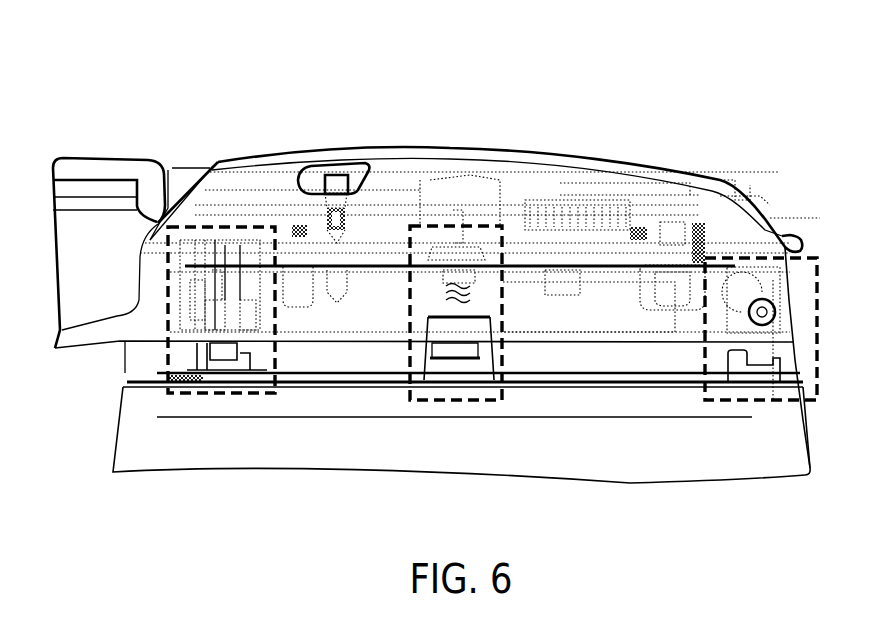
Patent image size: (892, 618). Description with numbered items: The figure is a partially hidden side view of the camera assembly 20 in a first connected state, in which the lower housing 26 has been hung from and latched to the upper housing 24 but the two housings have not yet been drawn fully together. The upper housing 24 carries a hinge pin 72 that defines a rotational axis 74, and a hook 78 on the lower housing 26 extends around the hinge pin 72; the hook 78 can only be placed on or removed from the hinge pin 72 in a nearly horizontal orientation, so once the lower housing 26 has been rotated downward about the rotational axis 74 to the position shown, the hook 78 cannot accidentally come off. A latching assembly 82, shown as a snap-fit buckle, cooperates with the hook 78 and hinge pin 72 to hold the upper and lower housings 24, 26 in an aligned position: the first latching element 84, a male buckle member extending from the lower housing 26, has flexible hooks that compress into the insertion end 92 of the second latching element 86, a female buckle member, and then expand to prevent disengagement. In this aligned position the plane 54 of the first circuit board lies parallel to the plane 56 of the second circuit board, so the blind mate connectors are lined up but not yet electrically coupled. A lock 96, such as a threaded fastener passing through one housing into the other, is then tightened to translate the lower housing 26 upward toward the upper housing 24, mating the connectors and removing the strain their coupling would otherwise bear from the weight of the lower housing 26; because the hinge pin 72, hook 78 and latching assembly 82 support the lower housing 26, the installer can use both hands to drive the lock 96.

The camera assembly 20 is at (566, 87).
The upper housing 24 is at (147, 162).
The lower housing 26 is at (141, 474).
The plane of the first circuit board 54 is at (710, 257).
The plane of the second circuit board 56 is at (635, 418).
The hinge pin 72 is at (773, 305).
The rotational axis 74 is at (765, 322).
The hook 78 is at (788, 318).
The latching assembly 82 is at (138, 363).
The first latching element 84 is at (253, 365).
The second latching element 86 is at (207, 293).
The insertion end 92 is at (218, 290).
The lock 96 is at (475, 300).